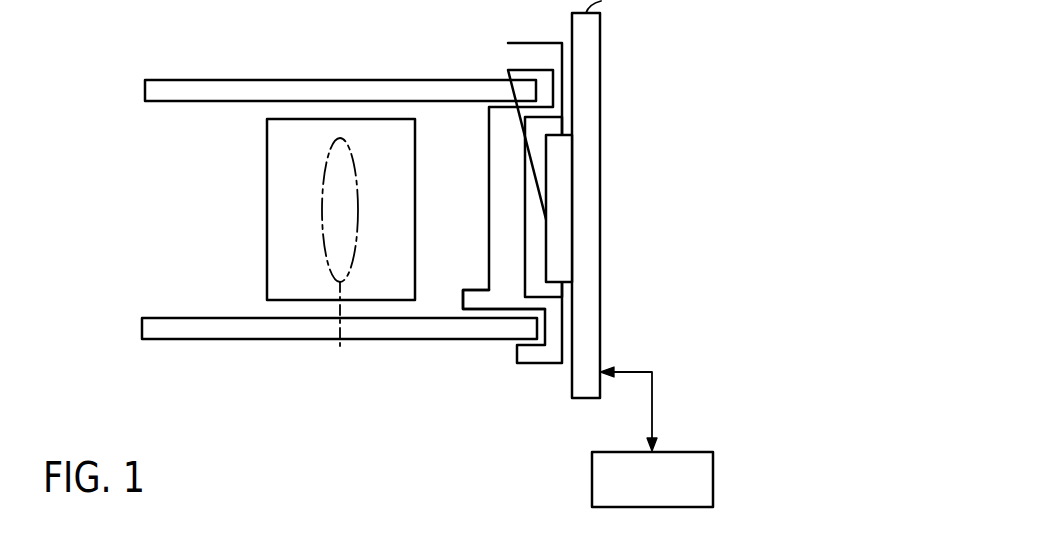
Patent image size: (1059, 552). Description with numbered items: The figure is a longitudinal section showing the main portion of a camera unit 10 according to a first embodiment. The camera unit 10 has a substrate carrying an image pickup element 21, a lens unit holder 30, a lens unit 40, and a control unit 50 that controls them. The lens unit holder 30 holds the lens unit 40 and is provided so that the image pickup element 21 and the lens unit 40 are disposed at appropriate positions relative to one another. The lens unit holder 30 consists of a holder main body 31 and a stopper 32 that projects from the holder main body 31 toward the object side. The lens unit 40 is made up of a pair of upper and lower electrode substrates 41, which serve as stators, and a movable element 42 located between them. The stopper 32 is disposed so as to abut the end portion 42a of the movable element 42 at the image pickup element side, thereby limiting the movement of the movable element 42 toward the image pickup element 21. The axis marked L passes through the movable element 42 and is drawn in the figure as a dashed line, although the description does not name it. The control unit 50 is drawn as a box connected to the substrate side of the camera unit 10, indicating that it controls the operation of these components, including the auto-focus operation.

The camera unit 10 is at (645, 203).
The image pickup element 21 is at (573, 247).
The lens unit holder 30 is at (495, 309).
The holder main body 31 is at (503, 178).
The stopper 32 is at (462, 294).
The lens unit 40 is at (339, 211).
The electrode substrates (stators) 41 is at (218, 92).
The movable element 42 is at (322, 120).
The end portion 42a is at (416, 215).
The optical axis L is at (337, 330).
The control unit 50 is at (687, 450).